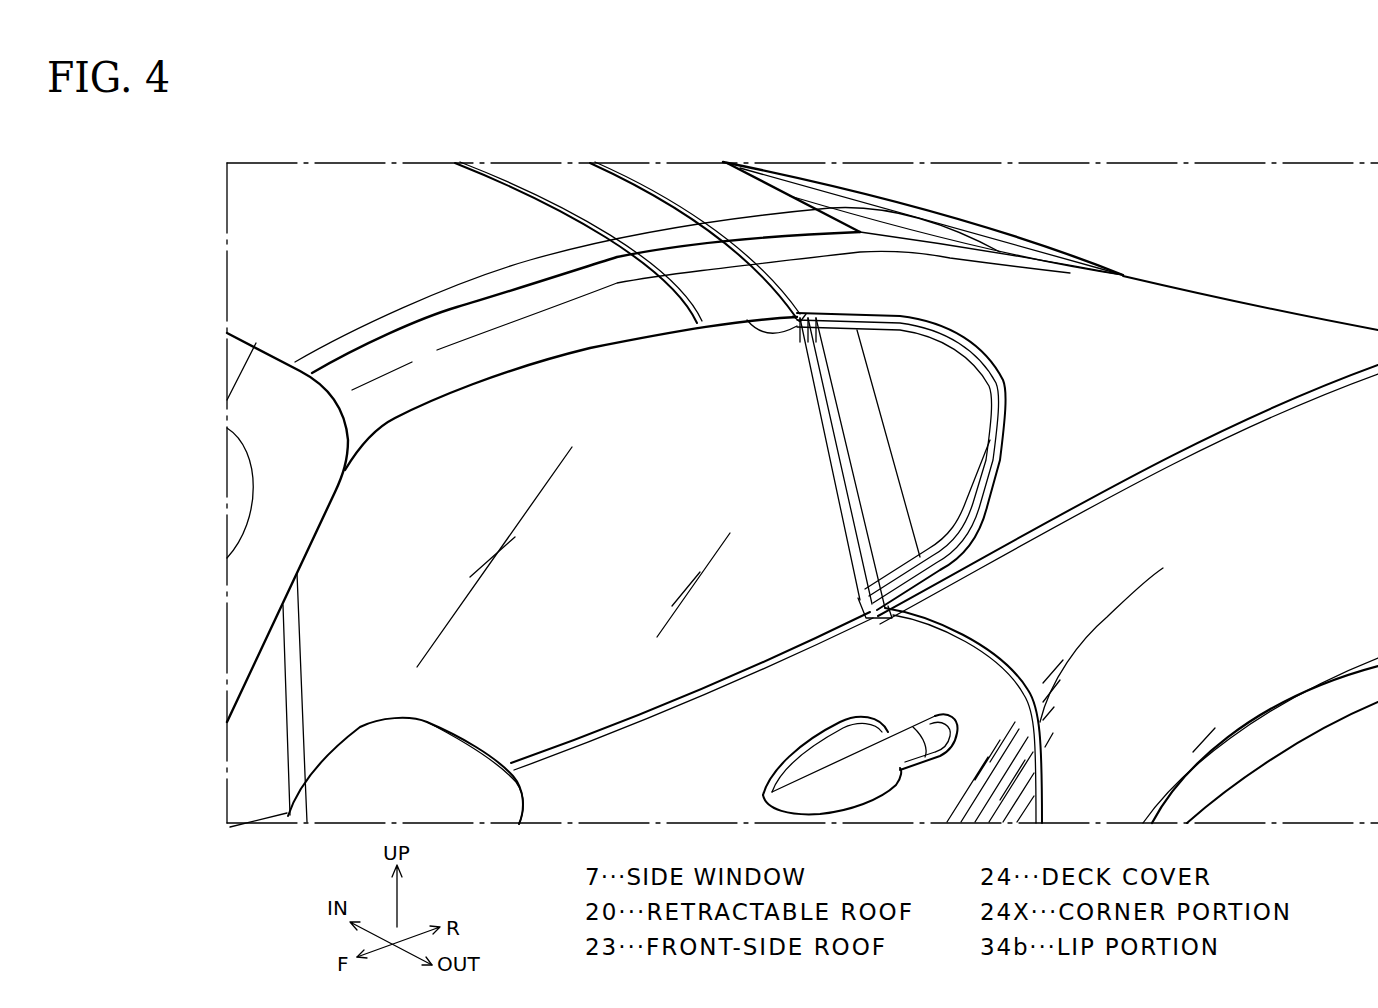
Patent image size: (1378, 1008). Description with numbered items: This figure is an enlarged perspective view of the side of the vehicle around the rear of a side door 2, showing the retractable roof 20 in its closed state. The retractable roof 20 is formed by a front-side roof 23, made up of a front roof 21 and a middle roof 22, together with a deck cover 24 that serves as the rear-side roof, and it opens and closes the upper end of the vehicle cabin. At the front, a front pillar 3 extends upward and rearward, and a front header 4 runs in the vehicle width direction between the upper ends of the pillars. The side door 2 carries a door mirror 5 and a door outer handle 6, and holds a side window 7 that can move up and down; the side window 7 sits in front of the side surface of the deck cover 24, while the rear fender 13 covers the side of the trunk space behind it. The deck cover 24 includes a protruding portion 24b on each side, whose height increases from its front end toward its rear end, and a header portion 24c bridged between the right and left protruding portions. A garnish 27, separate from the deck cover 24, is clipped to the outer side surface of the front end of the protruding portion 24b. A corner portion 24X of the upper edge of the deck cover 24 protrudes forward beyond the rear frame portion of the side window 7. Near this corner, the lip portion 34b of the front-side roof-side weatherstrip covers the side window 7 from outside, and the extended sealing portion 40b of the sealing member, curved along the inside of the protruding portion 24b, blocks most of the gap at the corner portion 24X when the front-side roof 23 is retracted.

The side door 2 is at (699, 768).
The front pillar 3 is at (290, 528).
The front header 4 is at (246, 340).
The door mirror 5 is at (433, 750).
The door outer handle 6 is at (843, 780).
The side window 7 is at (626, 537).
The rear fender 13 is at (1271, 571).
The retractable roof 20 is at (322, 140).
The front roof 21 is at (453, 190).
The middle roof 22 is at (531, 185).
The front-side roof 23 is at (542, 98).
The deck cover 24 is at (904, 205).
The protruding portion 24b is at (1157, 280).
The header portion 24c is at (697, 187).
The corner portion 24X is at (805, 312).
The garnish 27 is at (943, 463).
The lip portion 34b is at (758, 325).
The extended sealing portion 40b is at (798, 343).